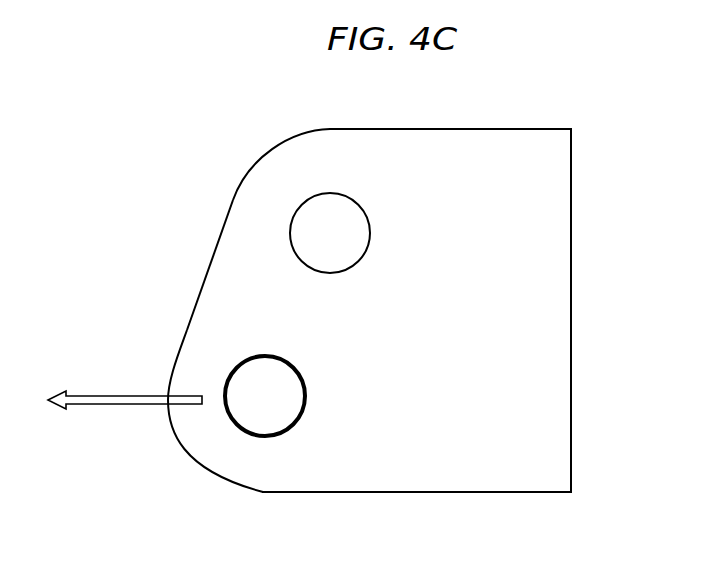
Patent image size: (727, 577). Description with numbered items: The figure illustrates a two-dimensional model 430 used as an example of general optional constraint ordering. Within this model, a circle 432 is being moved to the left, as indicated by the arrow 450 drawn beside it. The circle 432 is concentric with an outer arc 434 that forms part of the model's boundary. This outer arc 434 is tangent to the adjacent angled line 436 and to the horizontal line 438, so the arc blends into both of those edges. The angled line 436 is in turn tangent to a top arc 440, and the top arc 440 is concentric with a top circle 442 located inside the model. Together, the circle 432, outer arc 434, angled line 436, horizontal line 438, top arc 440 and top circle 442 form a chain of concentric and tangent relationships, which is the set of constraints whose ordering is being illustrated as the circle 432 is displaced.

The 2D model 430 is at (385, 324).
The circle 432 is at (305, 393).
The outer arc 434 is at (195, 463).
The angled line 436 is at (199, 290).
The horizontal line 438 is at (455, 492).
The top arc 440 is at (260, 153).
The top circle 442 is at (370, 236).
The arrow 450 is at (105, 404).